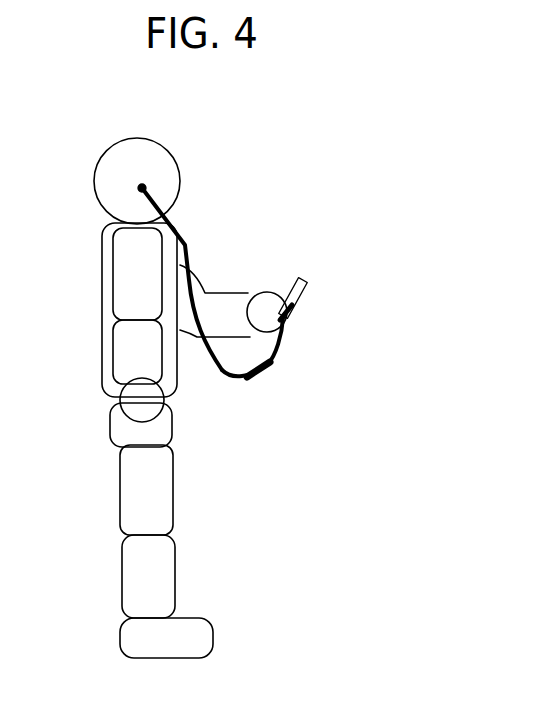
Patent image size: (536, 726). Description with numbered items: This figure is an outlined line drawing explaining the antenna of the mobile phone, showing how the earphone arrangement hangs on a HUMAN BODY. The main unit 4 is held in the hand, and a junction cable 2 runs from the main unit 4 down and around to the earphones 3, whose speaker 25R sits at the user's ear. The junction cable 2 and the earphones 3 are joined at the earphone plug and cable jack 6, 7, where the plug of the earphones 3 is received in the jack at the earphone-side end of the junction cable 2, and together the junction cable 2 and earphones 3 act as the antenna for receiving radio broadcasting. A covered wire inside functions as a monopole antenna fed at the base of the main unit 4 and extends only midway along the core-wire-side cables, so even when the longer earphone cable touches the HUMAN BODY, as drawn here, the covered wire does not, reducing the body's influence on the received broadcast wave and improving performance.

The speaker 25R is at (142, 188).
The main unit 4 is at (305, 282).
The junction cable 2 is at (283, 346).
The earphones 3 is at (213, 372).
The connector / sensor unit 6, 7 is at (263, 370).
The human body HUMAN BODY is at (168, 563).